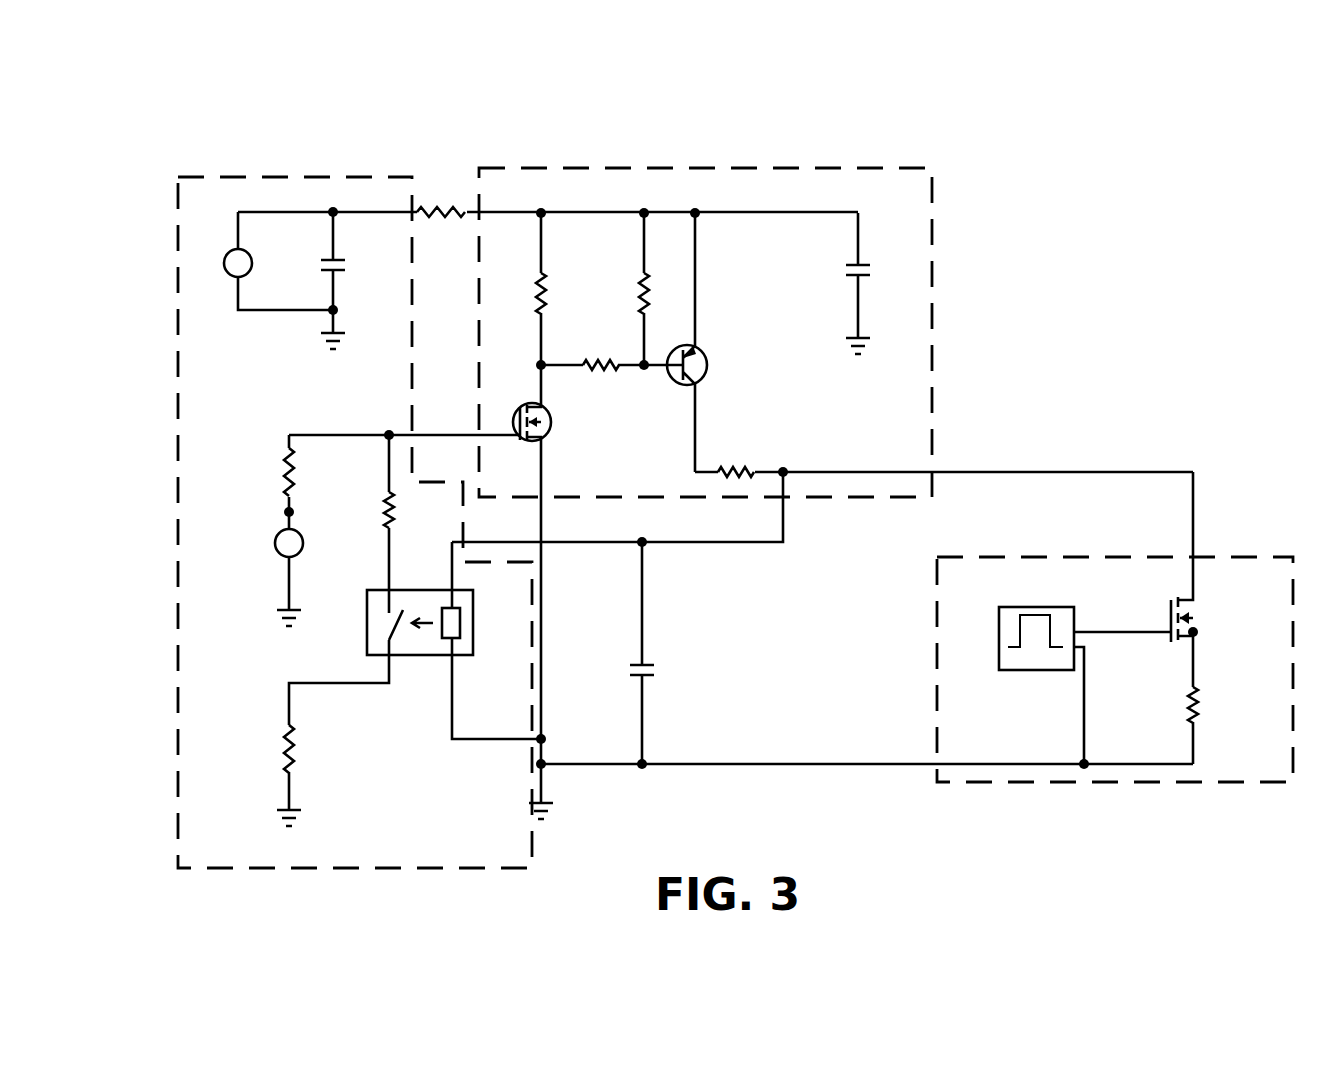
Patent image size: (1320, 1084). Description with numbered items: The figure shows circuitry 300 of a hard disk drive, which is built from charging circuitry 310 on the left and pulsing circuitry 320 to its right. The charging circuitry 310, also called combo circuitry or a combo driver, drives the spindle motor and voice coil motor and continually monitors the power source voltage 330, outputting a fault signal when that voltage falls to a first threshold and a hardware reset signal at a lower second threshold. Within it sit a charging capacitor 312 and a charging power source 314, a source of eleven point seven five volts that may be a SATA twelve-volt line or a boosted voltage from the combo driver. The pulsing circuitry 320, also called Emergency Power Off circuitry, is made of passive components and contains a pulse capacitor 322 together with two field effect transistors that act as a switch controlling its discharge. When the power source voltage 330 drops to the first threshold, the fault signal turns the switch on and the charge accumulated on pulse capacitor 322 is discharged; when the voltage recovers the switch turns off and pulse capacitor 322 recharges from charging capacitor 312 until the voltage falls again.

The circuitry 300 is at (163, 110).
The charging circuitry 310 is at (178, 265).
The charging capacitor 312 is at (363, 227).
The charging power source 314 is at (262, 214).
The pulsing circuitry 320 is at (932, 263).
The pulse capacitor 322 is at (893, 238).
The power source voltage 330 is at (1125, 560).